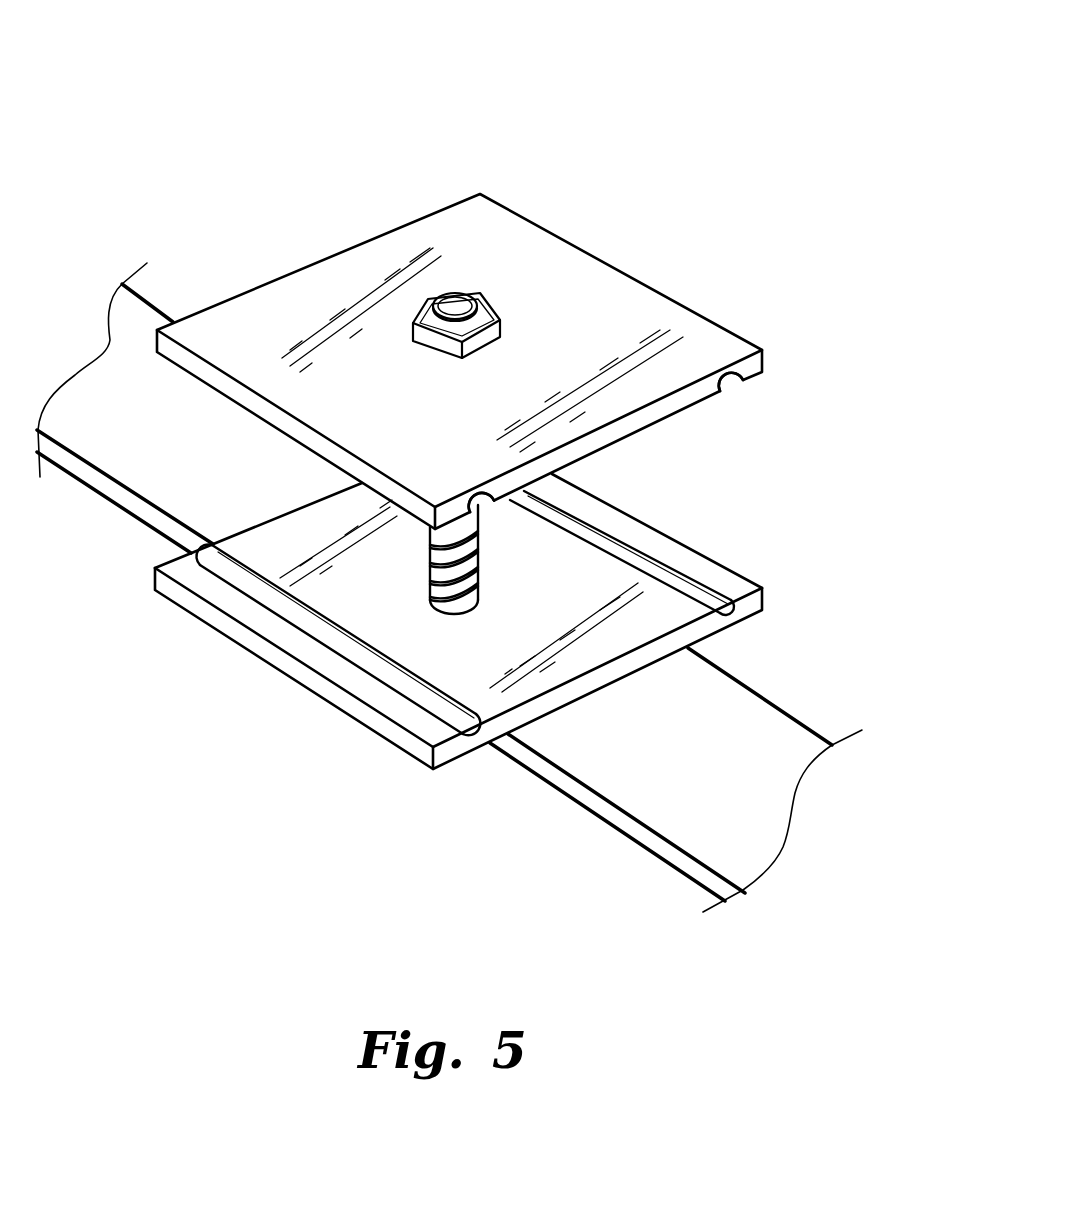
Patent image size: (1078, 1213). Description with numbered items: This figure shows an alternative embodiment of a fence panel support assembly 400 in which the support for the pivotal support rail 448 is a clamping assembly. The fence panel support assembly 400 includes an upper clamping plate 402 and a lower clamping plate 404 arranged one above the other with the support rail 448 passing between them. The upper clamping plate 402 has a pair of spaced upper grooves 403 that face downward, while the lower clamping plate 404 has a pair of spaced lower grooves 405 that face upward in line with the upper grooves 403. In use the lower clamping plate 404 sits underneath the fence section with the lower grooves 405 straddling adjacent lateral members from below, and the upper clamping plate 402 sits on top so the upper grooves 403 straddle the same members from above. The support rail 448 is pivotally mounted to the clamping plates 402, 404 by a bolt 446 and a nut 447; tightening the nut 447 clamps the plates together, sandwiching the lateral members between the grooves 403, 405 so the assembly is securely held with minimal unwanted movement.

The fence panel support assembly 400 is at (633, 133).
The upper clamping plate 402 is at (618, 290).
The upper grooves 403 is at (741, 394).
The lower clamping plate 404 is at (752, 612).
The lower grooves 405 is at (706, 571).
The bolt 446 is at (467, 600).
The nut 447 is at (483, 342).
The support rail 448 is at (683, 807).